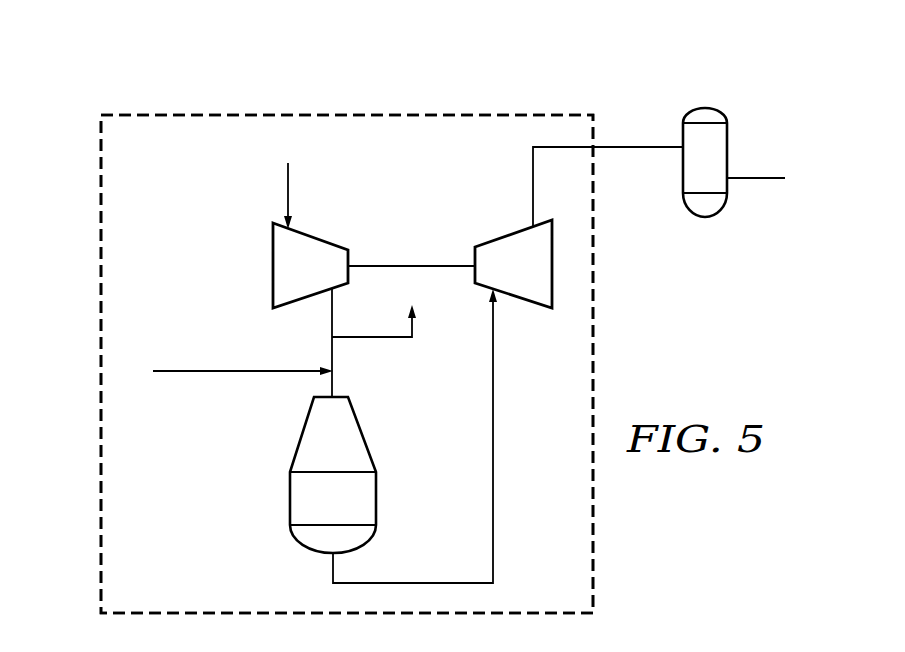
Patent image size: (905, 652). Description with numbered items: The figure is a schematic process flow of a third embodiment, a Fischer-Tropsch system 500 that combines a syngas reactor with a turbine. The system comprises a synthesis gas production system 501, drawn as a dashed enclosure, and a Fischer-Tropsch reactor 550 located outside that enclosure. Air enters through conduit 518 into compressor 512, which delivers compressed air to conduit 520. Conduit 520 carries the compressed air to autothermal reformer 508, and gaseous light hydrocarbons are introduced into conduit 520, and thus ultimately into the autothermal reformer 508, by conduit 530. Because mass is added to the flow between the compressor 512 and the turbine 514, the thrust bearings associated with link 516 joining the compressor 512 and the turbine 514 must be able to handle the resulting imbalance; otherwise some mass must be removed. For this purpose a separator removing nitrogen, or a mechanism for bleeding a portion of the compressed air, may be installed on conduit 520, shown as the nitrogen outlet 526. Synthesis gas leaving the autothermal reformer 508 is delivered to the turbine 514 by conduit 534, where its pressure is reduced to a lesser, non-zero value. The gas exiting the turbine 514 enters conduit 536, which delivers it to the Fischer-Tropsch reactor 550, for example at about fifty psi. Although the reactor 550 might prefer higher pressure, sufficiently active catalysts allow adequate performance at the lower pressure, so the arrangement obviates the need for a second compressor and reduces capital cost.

The Fischer-Tropsch system 500 is at (266, 93).
The synthesis gas production system 501 is at (101, 501).
The autothermal reformer 508 is at (290, 501).
The compressor 512 is at (328, 277).
The turbine 514 is at (535, 277).
The link 516 is at (412, 262).
The conduit 518 is at (285, 184).
The conduit 520 is at (330, 328).
The separator or bleed mechanism 526 is at (382, 342).
The conduit 530 is at (200, 368).
The conduit 534 is at (493, 477).
The conduit 536 is at (630, 146).
The Fischer-Tropsch reactor 550 is at (729, 146).